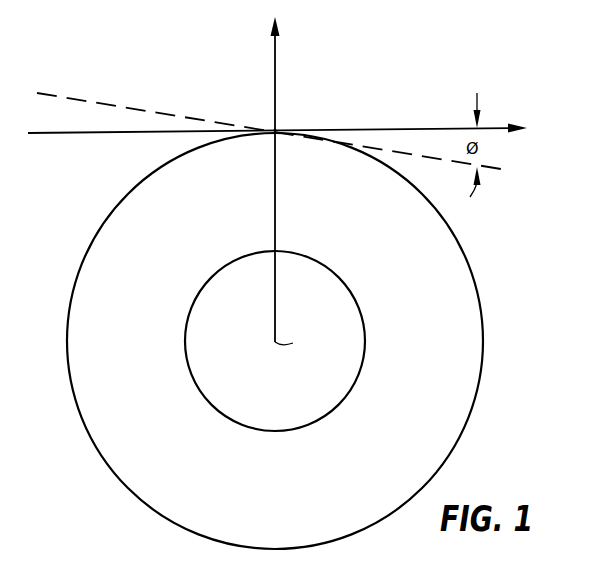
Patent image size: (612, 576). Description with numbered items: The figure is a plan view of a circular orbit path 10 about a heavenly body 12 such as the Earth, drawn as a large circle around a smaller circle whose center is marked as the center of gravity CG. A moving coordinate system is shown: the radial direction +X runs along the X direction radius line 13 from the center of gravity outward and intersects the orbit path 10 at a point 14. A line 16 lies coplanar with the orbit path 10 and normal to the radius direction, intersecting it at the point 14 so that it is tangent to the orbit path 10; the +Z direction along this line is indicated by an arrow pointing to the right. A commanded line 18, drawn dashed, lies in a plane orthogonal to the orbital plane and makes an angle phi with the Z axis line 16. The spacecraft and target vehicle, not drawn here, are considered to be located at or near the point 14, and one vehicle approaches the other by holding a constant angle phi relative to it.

The circular orbit path 10 is at (482, 285).
The heavenly body 12 is at (365, 331).
The radius line 13 is at (277, 190).
The point 14 is at (276, 130).
The line 16 is at (92, 133).
The commanded line 18 is at (140, 108).